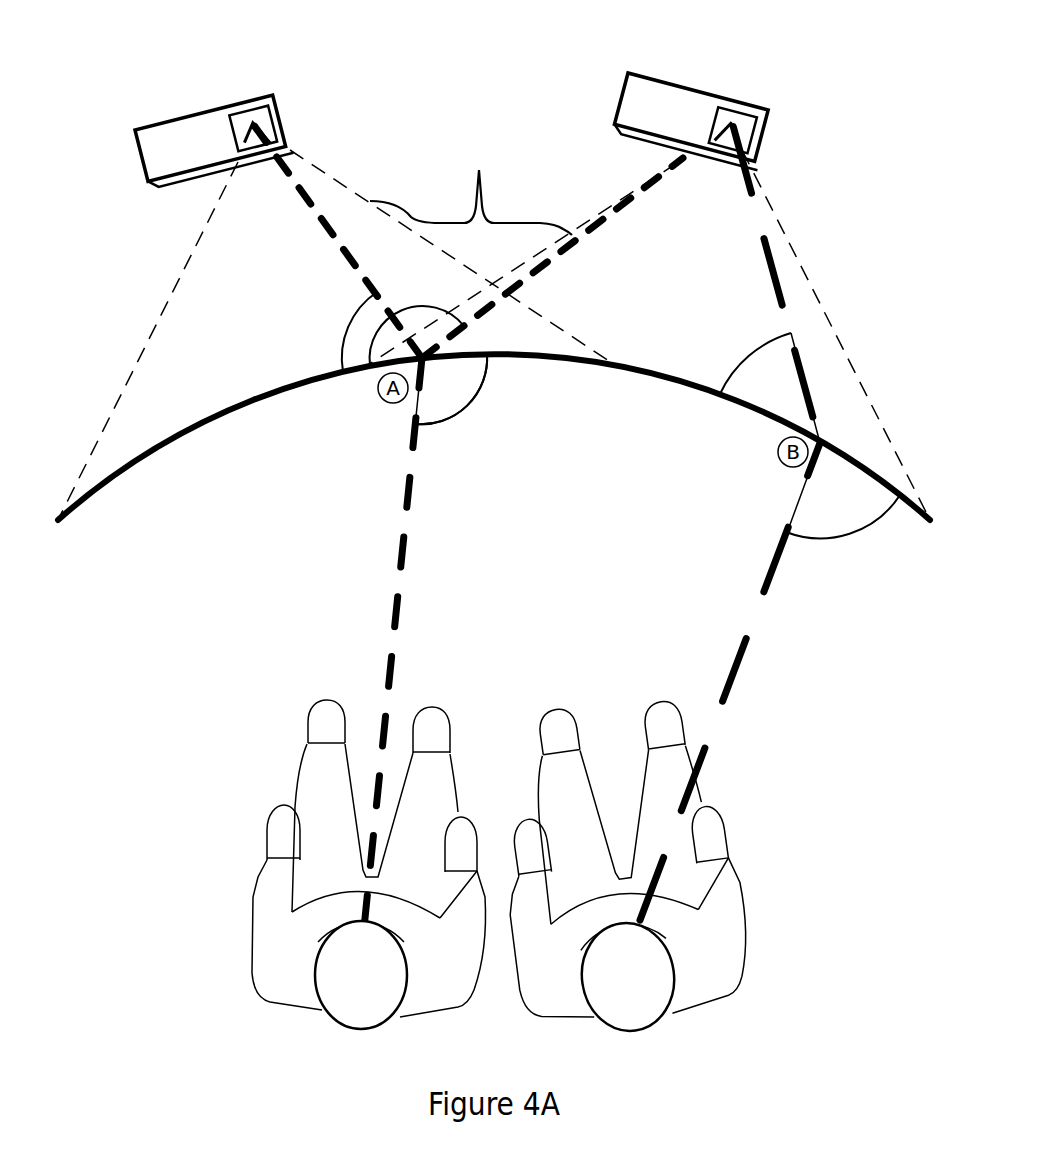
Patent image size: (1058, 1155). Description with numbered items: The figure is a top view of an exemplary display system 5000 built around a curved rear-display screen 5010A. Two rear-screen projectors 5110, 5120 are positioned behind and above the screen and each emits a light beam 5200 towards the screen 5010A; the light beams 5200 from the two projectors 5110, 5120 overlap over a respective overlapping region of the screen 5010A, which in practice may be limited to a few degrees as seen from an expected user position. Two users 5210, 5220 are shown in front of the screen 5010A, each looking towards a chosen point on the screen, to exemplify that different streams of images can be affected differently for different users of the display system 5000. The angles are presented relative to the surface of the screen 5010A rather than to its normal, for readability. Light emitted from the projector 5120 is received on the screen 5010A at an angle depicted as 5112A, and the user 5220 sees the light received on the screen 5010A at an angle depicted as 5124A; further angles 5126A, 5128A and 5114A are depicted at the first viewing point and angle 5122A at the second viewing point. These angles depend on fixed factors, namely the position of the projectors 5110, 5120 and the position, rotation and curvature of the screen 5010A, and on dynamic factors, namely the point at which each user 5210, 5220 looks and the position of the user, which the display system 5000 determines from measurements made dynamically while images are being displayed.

The display system 5000 is at (91, 52).
The display screen 5010A is at (207, 421).
The rear-screen projector 5110 is at (278, 511).
The rear-screen projector 5120 is at (694, 127).
The light beam 5200 is at (494, 330).
The angle 5112A is at (348, 322).
The angle 5126A is at (425, 305).
The angle 5128A is at (478, 400).
The angle 5114A is at (483, 440).
The angle 5122A is at (753, 350).
The angle 5124A is at (850, 533).
The user 5210 is at (392, 987).
The user 5220 is at (648, 989).